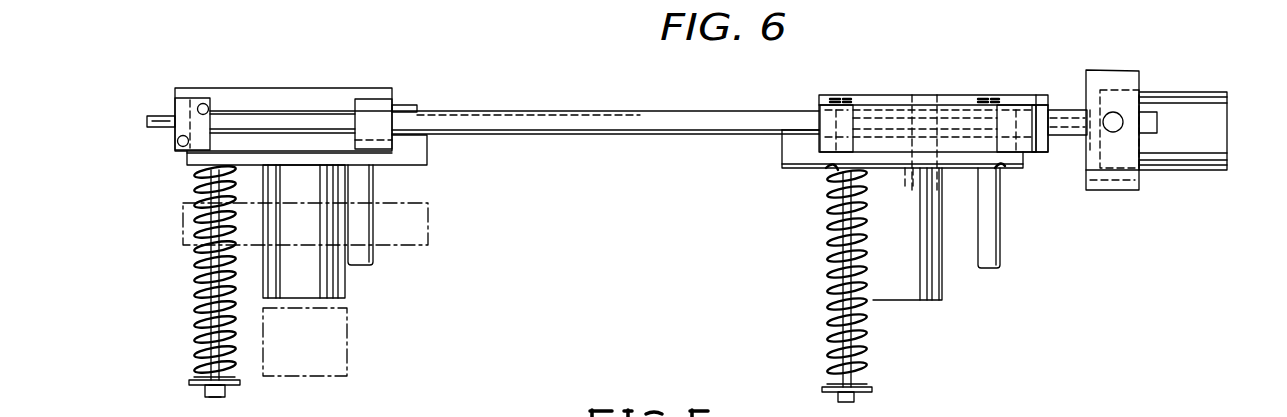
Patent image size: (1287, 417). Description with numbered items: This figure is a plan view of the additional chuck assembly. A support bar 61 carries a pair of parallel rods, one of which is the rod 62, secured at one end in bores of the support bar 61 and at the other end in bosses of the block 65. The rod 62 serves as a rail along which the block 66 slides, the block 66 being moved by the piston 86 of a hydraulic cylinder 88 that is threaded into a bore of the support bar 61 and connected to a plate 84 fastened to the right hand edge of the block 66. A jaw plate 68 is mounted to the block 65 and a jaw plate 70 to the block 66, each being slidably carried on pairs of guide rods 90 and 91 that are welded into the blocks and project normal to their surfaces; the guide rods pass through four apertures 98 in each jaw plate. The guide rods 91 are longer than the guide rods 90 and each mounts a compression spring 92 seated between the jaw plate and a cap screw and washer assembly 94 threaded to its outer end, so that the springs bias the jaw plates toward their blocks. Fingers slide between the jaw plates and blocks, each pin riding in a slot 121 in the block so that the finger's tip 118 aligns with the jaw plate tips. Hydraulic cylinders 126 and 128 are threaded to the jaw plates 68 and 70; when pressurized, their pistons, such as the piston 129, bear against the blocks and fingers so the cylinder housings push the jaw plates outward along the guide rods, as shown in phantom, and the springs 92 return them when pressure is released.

The support bar 61 is at (1118, 182).
The rod 62 is at (738, 112).
The block 65 is at (352, 88).
The block 66 is at (905, 95).
The jaw plate 68 is at (413, 160).
The jaw plate 70 is at (800, 166).
The plate 84 is at (1043, 150).
The piston 86 is at (1072, 112).
The hydraulic cylinder 88 is at (1205, 102).
The guide rod 90 is at (366, 256).
The guide rod 91 is at (203, 340).
The compression spring 92 is at (228, 355).
The cap screw and washer assembly 94 is at (222, 398).
The aperture 98 is at (826, 186).
The tip 118 is at (787, 118).
The slot 121 is at (922, 100).
The hydraulic cylinder 126 is at (346, 283).
The hydraulic cylinder 128 is at (946, 286).
The piston 129 is at (909, 234).